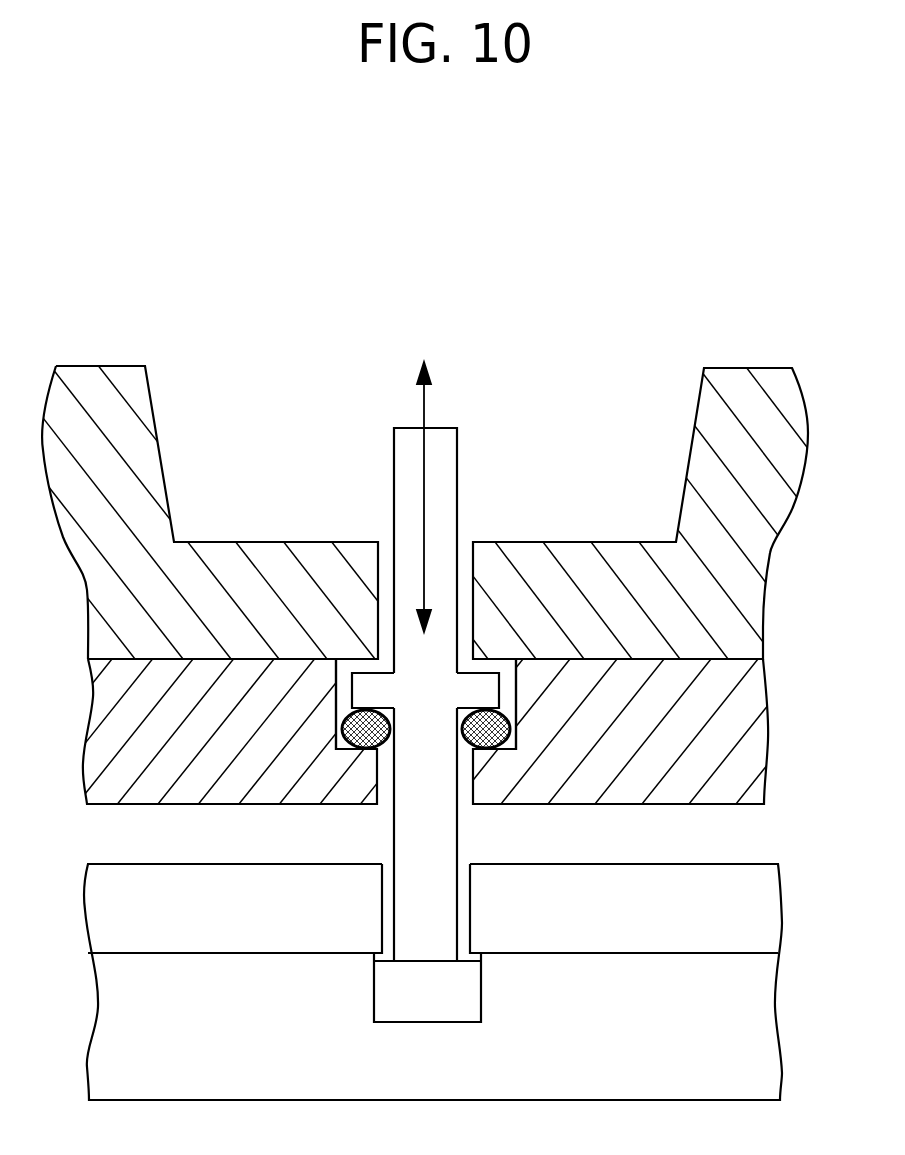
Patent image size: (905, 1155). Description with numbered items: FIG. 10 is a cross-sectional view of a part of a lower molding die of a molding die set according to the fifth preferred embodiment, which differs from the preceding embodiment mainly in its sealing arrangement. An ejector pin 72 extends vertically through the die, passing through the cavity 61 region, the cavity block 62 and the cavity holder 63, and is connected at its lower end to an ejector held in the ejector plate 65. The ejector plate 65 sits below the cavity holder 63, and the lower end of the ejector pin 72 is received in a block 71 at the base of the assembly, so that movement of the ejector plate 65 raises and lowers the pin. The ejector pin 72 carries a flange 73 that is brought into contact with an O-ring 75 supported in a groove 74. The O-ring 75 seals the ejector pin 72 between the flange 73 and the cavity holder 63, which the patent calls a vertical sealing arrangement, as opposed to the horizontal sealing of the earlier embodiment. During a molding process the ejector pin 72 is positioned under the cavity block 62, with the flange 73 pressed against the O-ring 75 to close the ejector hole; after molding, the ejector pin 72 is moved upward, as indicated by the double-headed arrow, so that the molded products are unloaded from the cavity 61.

The cavity 61 is at (607, 390).
The cavity block 62 is at (760, 598).
The cavity holder 63 is at (768, 742).
The ejector plate 65 is at (768, 988).
The drive block 71 is at (445, 1018).
The ejector pin 72 is at (447, 440).
The flange 73 is at (357, 693).
The groove 74 is at (360, 667).
The O-ring 75 is at (353, 737).